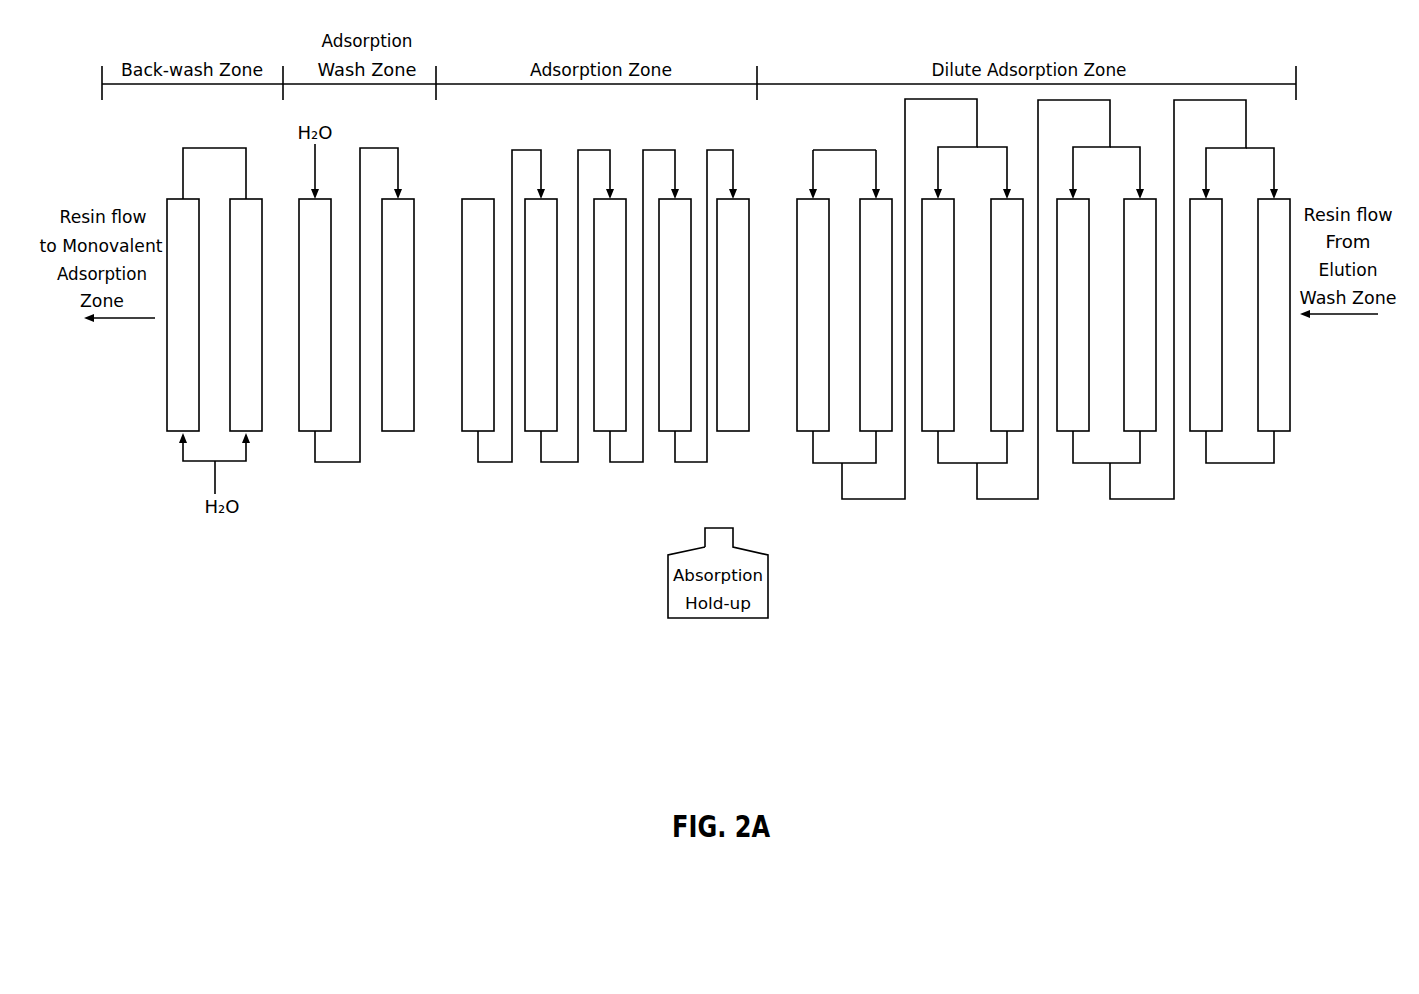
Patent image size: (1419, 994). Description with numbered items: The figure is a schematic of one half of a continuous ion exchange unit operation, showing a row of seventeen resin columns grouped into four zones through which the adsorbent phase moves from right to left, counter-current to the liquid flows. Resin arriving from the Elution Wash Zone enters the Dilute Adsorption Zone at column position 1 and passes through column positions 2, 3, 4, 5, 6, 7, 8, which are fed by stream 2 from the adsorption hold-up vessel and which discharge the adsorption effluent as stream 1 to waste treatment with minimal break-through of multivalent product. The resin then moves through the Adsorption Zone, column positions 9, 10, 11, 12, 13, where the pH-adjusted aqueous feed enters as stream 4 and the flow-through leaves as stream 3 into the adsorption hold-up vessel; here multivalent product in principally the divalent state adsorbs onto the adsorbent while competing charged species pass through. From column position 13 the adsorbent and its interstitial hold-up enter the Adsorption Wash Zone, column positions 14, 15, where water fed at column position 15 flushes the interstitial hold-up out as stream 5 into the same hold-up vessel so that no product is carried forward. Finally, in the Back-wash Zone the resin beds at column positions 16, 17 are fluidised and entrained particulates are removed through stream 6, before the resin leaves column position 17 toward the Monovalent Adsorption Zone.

The adsorption effluent stream 1 is at (1247, 524).
The adsorption hold-up feed stream 2 is at (995, 333).
The Adsorption Zone flow-through stream 3 is at (727, 518).
The feed stream 4 is at (478, 146).
The Adsorption Wash Zone flow-through stream 5 is at (485, 567).
The back-wash stream 6 is at (212, 104).
The column position 7 is at (876, 315).
The column position 8 is at (813, 315).
The column position 9 is at (733, 315).
The column position 10 is at (675, 315).
The column position 11 is at (610, 315).
The column position 12 is at (541, 315).
The column position 13 is at (478, 315).
The column position 14 is at (398, 315).
The column position 15 is at (315, 315).
The column position 16 is at (246, 315).
The column position 17 is at (183, 315).